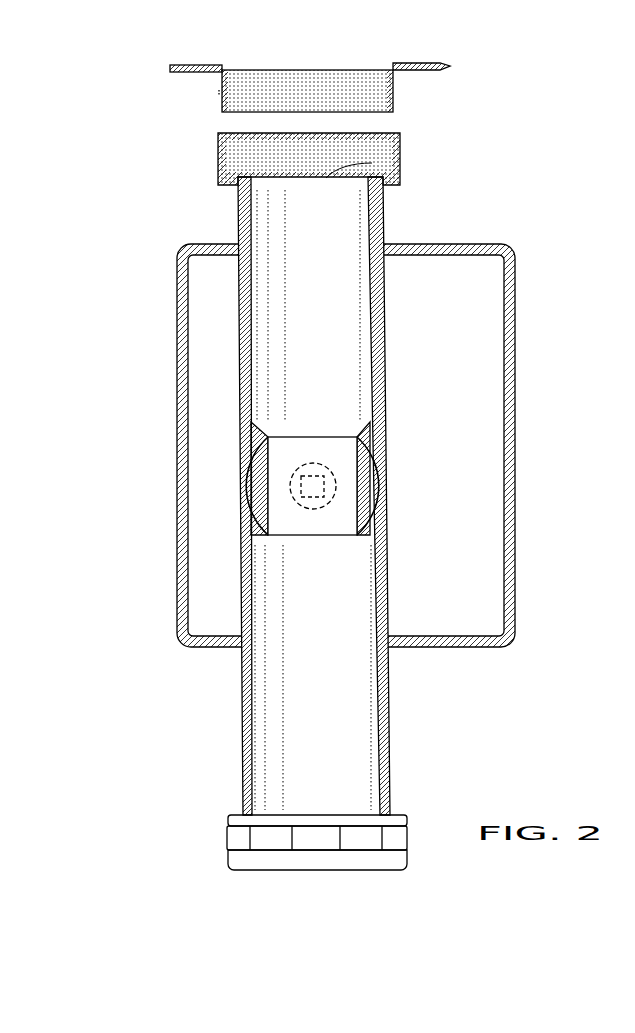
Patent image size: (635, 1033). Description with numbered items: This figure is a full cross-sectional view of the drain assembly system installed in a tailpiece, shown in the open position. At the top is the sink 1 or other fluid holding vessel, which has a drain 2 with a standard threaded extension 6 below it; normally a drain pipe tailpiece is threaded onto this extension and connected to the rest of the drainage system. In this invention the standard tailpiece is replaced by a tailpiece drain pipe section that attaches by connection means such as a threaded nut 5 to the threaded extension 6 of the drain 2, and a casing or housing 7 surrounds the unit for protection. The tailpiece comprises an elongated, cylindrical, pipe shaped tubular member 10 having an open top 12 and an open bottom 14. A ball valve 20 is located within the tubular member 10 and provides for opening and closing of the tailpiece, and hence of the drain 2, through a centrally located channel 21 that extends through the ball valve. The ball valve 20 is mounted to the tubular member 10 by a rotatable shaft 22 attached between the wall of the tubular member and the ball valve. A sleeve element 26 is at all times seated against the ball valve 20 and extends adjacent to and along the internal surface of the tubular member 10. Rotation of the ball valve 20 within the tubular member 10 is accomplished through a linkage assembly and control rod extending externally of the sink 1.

The sink 1 is at (200, 66).
The drain 2 is at (279, 72).
The threaded nut 5 is at (218, 162).
The threaded extension 6 is at (220, 92).
The housing 7 is at (510, 252).
The tubular member 10 is at (238, 404).
The open top 12 is at (328, 176).
The open bottom 14 is at (262, 862).
The ball valve 20 is at (263, 518).
The channel 21 is at (308, 446).
The rotatable shaft 22 is at (325, 490).
The sleeve element 26 is at (245, 222).